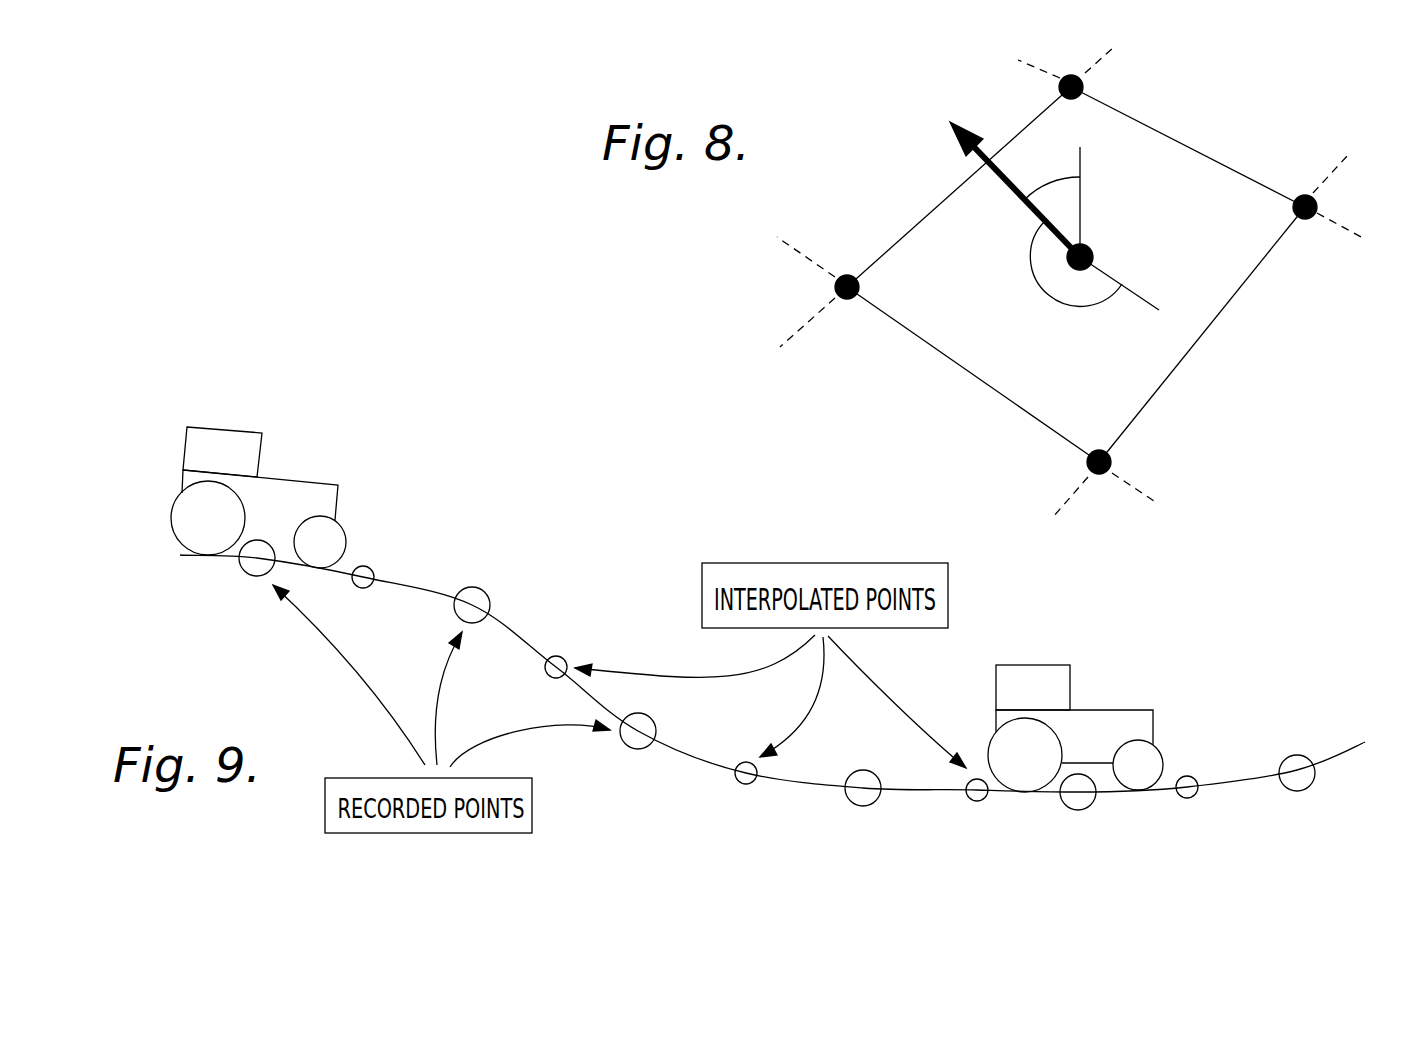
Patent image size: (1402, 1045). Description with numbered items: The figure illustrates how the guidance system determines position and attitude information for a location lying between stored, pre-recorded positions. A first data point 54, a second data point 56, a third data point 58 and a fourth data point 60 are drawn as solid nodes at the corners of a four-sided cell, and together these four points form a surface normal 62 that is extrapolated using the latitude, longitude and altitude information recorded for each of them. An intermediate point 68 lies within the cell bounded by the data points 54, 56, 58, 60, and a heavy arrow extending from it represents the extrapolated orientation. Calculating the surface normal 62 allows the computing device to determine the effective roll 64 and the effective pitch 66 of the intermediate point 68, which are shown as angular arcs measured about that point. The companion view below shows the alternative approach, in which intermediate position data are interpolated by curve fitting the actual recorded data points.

The first data point 54 is at (1065, 67).
The second data point 56 is at (818, 292).
The third data point 58 is at (1105, 483).
The fourth data point 60 is at (1331, 196).
The surface normal 62 is at (982, 296).
The effective roll 64 is at (1052, 173).
The effective pitch 66 is at (1076, 279).
The intermediate point 68 is at (1092, 247).